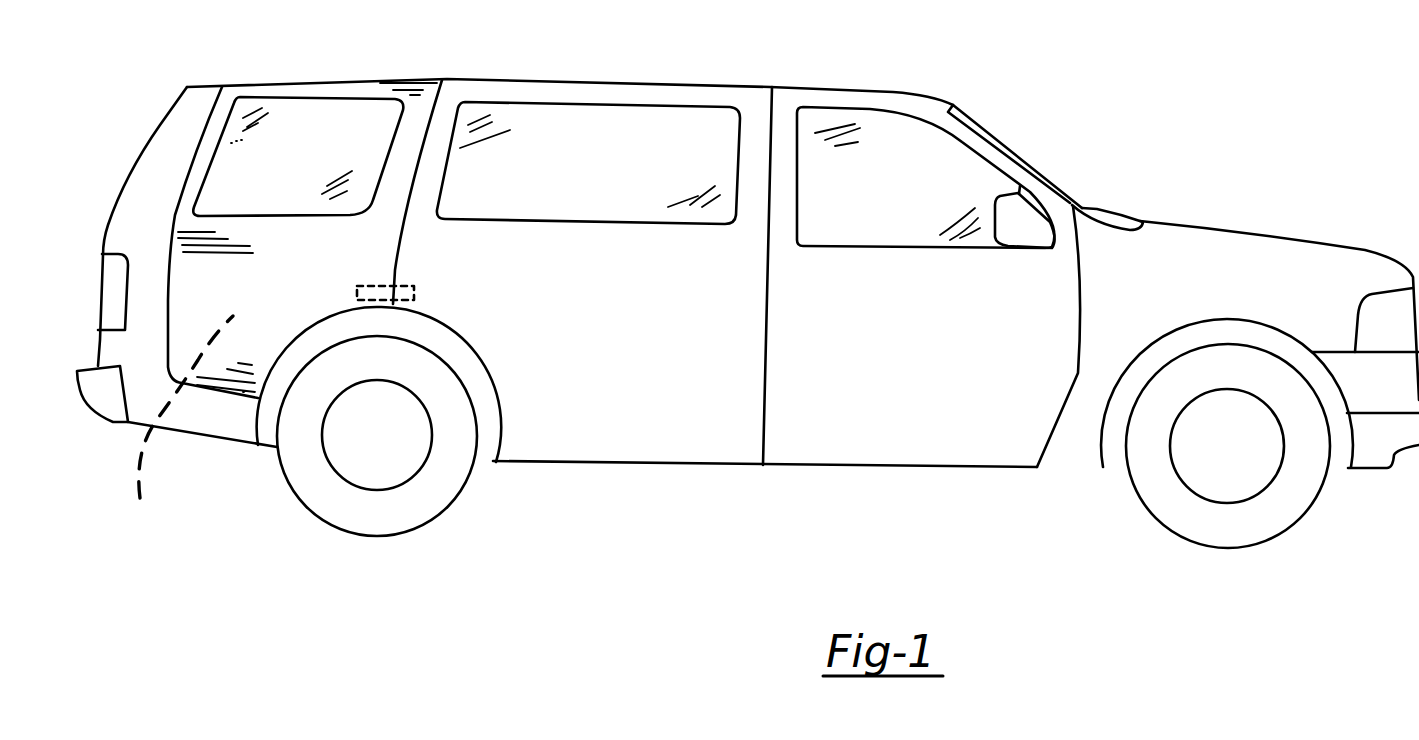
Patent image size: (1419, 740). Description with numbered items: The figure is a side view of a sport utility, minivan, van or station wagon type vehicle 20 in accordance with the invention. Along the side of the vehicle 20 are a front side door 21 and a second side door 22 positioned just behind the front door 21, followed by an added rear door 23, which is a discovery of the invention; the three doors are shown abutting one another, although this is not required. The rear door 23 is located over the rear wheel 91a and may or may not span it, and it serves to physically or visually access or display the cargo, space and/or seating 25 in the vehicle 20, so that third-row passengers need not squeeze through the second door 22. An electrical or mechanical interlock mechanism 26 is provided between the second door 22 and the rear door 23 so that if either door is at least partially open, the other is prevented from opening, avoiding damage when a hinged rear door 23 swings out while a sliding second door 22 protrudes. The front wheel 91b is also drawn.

The vehicle 20 is at (1090, 100).
The front side door 21 is at (834, 98).
The second side door 22 is at (567, 94).
The rear door 23 is at (370, 92).
The cargo, space, and/or seating 25 is at (186, 423).
The interlock mechanism 26 is at (420, 296).
The rear wheel 91a is at (316, 507).
The front wheel 91b is at (1190, 530).